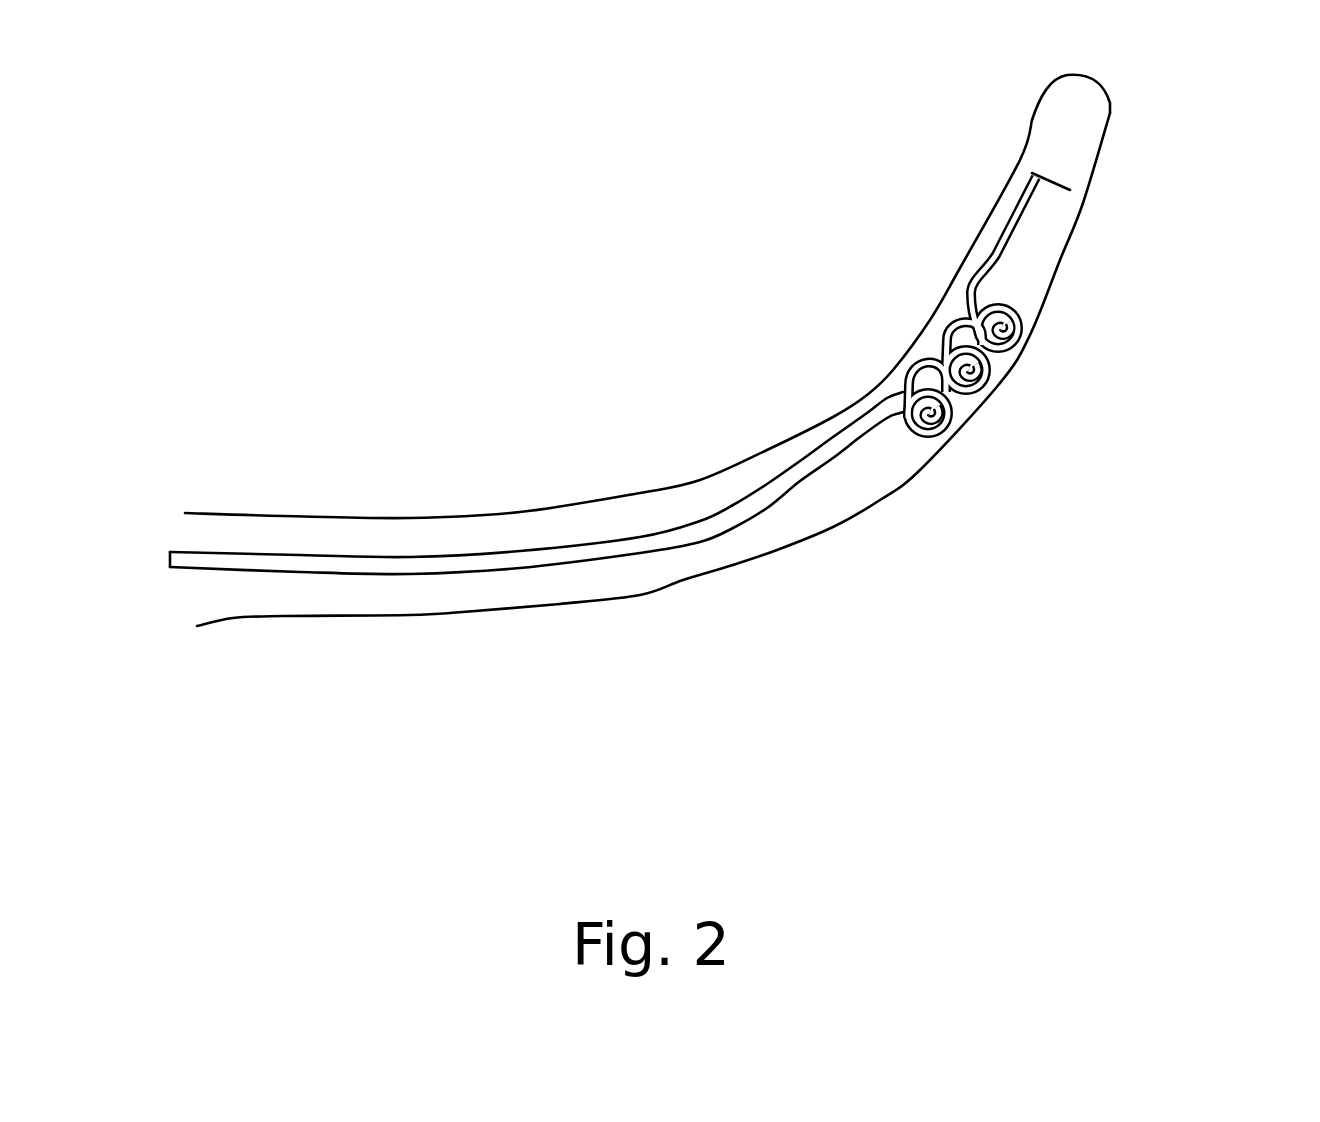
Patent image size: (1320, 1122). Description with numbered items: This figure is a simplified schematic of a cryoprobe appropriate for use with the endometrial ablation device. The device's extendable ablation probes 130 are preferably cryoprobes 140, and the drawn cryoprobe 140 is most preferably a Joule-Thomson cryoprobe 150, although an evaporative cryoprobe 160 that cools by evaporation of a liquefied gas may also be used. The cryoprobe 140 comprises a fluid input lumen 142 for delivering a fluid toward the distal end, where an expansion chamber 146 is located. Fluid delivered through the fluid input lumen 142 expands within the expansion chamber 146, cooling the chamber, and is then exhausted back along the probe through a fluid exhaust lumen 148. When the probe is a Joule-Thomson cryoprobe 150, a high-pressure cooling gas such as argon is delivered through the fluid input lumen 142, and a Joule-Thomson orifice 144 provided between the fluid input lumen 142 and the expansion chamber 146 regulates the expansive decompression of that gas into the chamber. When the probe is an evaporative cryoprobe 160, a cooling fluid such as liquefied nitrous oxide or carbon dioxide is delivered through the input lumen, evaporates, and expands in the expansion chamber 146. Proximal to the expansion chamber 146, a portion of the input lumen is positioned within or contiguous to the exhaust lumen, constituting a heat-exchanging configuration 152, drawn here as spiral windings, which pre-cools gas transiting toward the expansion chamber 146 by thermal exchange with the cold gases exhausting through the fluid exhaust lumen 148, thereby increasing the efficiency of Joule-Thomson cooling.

The ablation probe 130 is at (327, 617).
The cryoprobe 140 is at (463, 613).
The fluid input lumen 142 is at (397, 563).
The Joule-Thomson orifice 144 is at (1042, 168).
The expansion chamber 146 is at (1104, 125).
The fluid exhaust lumen 148 is at (1038, 263).
The Joule-Thomson cryoprobe 150 is at (640, 595).
The heat-exchanging configuration 152 is at (978, 382).
The evaporative cryoprobe 160 is at (737, 563).